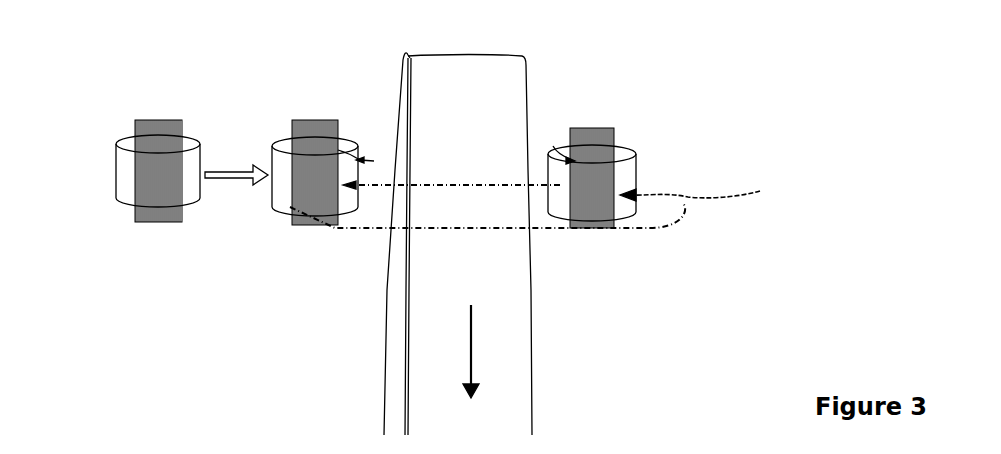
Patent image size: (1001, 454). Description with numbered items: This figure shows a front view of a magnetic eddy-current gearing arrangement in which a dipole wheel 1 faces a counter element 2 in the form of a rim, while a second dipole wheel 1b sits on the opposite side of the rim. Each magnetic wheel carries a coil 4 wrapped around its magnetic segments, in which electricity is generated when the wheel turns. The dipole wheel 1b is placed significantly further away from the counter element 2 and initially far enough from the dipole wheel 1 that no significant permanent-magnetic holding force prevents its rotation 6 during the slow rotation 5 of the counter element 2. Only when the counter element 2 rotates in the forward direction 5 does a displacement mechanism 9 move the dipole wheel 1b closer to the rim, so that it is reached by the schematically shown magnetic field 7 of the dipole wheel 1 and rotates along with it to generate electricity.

The dipole wheel 1 is at (698, 190).
The dipole wheel 1b is at (292, 134).
The counter element 2 is at (403, 66).
The coil 4 is at (152, 225).
The forward direction 5 is at (495, 353).
The direction of rotation 6 is at (338, 138).
The magnetic field 7 is at (547, 232).
The displacement mechanism 9 is at (233, 182).